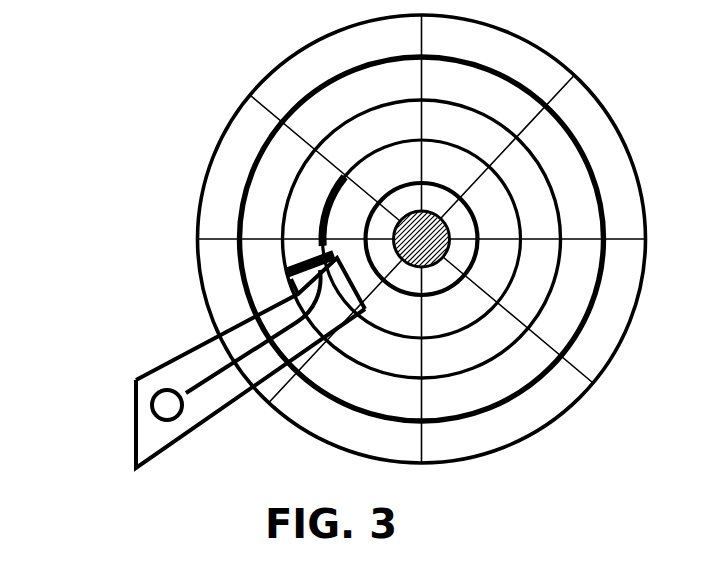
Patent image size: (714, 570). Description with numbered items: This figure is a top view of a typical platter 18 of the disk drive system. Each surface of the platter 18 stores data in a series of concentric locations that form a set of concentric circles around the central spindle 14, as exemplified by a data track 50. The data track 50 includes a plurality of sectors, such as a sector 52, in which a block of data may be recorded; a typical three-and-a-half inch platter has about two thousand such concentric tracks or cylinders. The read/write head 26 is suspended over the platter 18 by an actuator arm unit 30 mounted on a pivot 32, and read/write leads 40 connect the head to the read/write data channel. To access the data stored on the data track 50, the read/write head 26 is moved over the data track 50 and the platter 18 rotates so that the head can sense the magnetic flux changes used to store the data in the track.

The spindle 14 is at (443, 223).
The platter 18 is at (199, 215).
The read/write head 26 is at (247, 263).
The actuator arm unit 30 is at (135, 398).
The pivot 32 is at (163, 389).
The read/write leads 40 is at (206, 380).
The data track 50 is at (259, 156).
The sector 52 is at (323, 219).